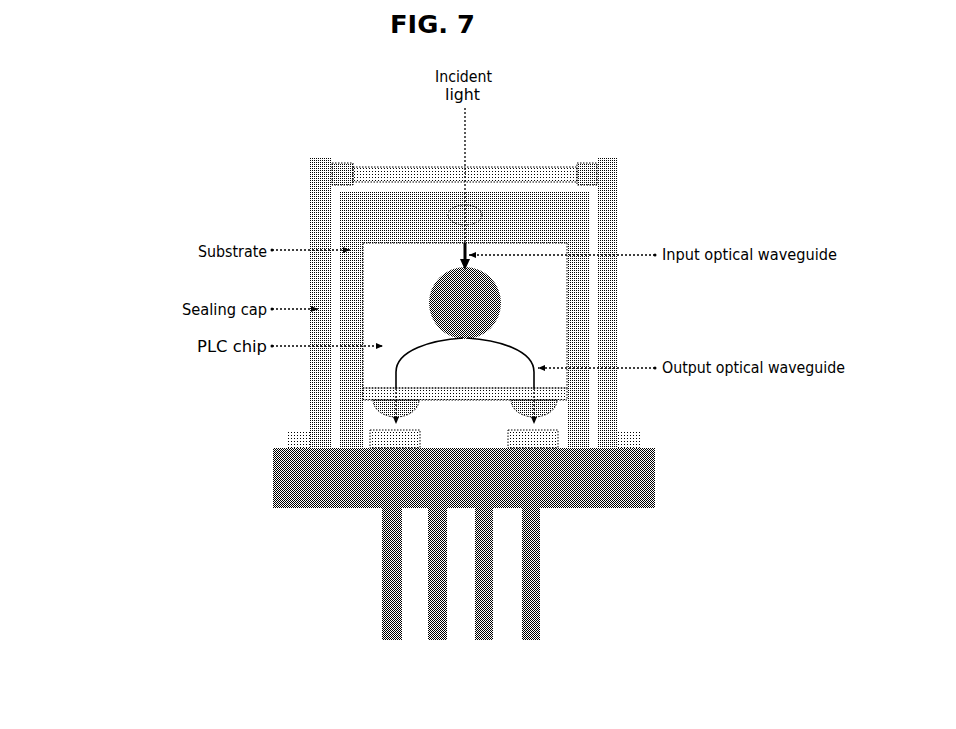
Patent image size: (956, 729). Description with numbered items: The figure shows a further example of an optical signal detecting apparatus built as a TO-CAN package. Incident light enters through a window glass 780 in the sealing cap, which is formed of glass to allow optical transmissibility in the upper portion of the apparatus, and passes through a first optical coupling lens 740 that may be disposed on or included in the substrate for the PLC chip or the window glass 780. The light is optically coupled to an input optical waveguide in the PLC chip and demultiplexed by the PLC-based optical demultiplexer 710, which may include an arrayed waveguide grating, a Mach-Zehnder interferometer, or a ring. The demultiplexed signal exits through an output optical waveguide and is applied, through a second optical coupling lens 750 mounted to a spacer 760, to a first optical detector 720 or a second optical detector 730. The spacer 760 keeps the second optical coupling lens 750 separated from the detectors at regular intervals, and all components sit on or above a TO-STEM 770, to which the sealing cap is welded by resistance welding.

The optical demultiplexer 710 is at (482, 303).
The first optical detector 720 is at (383, 438).
The second optical detector 730 is at (543, 438).
The first optical coupling lens 740 is at (449, 215).
The second optical coupling lens 750 is at (385, 407).
The spacer 760 is at (575, 413).
The TO-STEM 770 is at (305, 478).
The window glass 780 is at (530, 180).